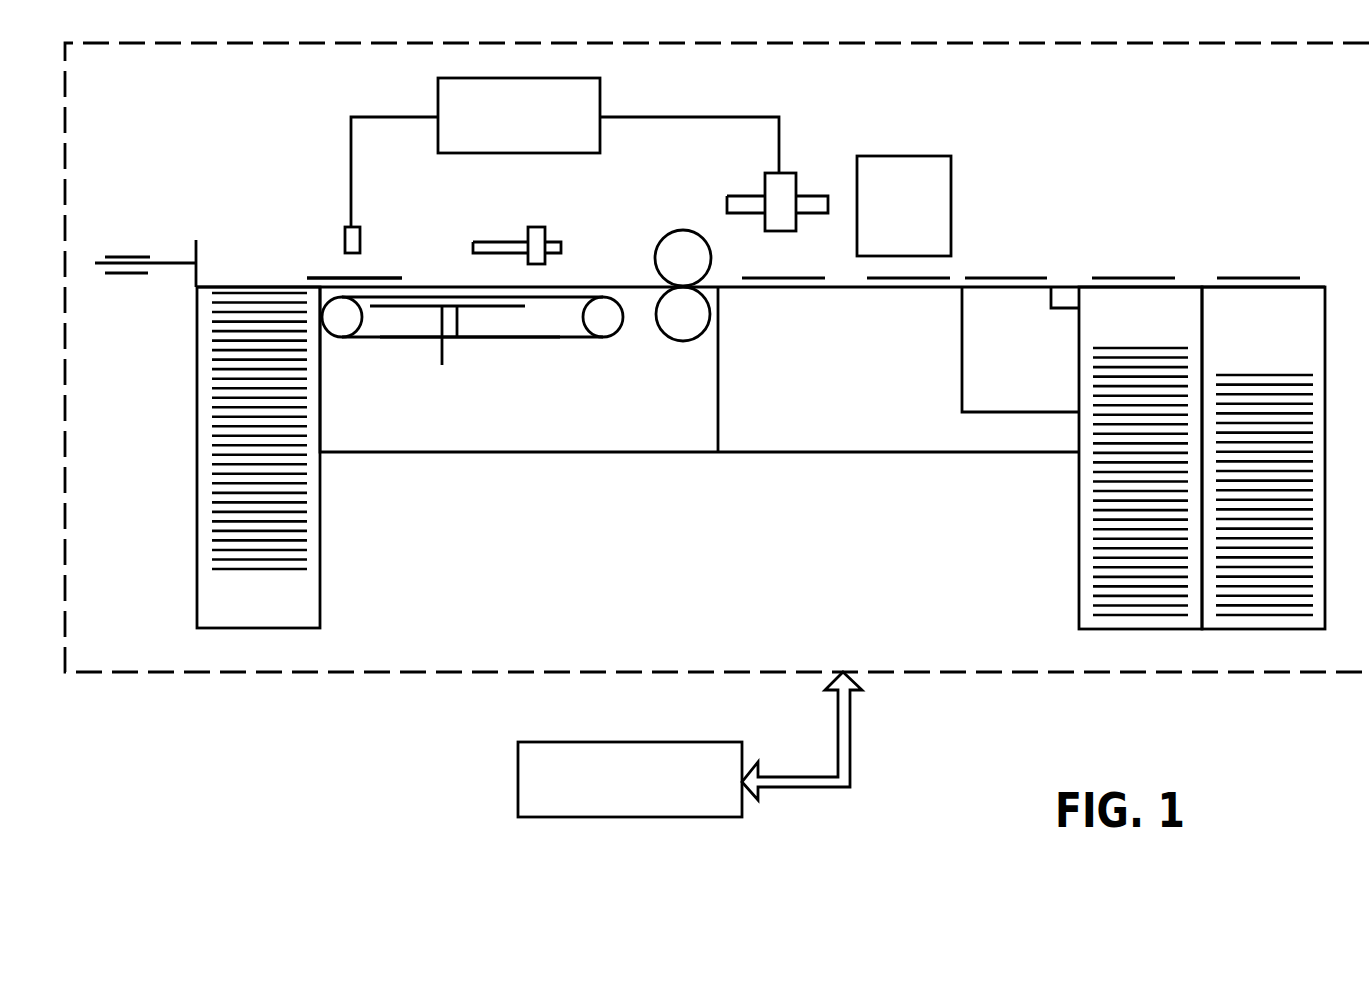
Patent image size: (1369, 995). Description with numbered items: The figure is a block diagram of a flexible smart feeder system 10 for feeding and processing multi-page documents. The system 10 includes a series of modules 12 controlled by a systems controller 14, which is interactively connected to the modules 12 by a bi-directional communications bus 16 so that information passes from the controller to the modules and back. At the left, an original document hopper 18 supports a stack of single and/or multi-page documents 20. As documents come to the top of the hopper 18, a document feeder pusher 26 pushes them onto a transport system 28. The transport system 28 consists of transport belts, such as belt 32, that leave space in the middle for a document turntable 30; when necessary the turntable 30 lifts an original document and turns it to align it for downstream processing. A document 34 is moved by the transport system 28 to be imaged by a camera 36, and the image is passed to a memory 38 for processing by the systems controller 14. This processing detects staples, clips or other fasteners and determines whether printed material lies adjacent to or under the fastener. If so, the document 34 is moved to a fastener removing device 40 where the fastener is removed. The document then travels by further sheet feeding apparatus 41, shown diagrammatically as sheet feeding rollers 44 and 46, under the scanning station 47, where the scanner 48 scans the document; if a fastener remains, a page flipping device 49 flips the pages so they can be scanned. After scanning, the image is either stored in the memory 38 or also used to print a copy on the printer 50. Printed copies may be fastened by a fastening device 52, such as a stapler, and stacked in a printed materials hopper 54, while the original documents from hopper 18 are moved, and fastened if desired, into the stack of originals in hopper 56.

The flexible smart feeder system 10 is at (303, 770).
The modules 12 is at (278, 672).
The systems controller 14 is at (623, 742).
The bi-directional communications bus 16 is at (852, 720).
The original document hopper 18 is at (195, 473).
The stack of documents 20 is at (215, 377).
The document feeder pusher 26 is at (177, 263).
The transport system 28 is at (495, 355).
The document turntable 30 is at (412, 305).
The transport belt 32 is at (533, 340).
The document 34 is at (375, 278).
The camera 36 is at (345, 246).
The memory 38 is at (438, 97).
The fastener removing device 40 is at (541, 227).
The sheet feeding apparatus 41 is at (636, 248).
The sheet feeding roller 44 is at (660, 235).
The sheet feeding roller 46 is at (688, 340).
The scanning station 47 is at (817, 162).
The scanner 48 is at (765, 178).
The page flipping device 49 is at (910, 158).
The printer 50 is at (1013, 413).
The fastening device 52 is at (1058, 293).
The printed materials hopper 54 is at (1144, 630).
The hopper 56 is at (1255, 630).